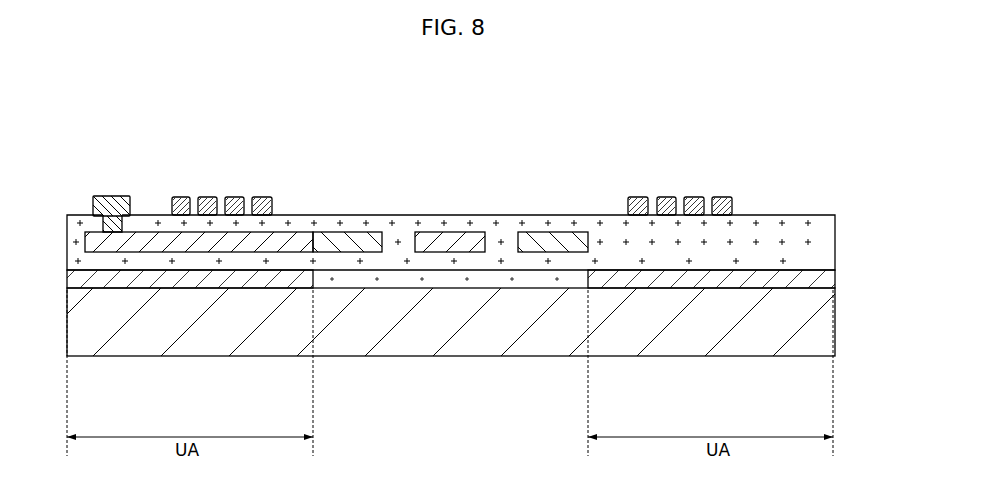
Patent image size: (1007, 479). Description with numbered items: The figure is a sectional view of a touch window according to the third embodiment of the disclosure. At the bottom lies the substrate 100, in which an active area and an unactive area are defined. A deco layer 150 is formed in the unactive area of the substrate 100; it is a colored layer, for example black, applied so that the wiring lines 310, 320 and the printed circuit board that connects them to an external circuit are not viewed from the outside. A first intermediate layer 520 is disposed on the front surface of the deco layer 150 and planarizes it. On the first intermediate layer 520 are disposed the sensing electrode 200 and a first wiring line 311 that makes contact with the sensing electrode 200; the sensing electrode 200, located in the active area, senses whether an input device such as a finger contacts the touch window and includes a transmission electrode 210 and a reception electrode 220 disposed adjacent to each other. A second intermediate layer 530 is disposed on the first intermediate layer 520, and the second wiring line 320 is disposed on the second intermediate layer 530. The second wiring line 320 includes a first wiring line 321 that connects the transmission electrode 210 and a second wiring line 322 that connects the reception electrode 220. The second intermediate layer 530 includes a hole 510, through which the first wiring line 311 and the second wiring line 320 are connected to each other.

The substrate 100 is at (556, 328).
The deco layer 150 is at (790, 280).
The sensing electrode 200 is at (501, 170).
The transmission electrode 210 is at (553, 188).
The reception electrode 220 is at (452, 232).
The wiring line 310 is at (199, 312).
The first wiring line 311 is at (238, 245).
The second wiring line 320 is at (412, 155).
The first wiring line 321 is at (110, 196).
The second wiring line 322 is at (452, 164).
The hole 510 is at (112, 232).
The first intermediate layer 520 is at (389, 265).
The second intermediate layer 530 is at (347, 240).